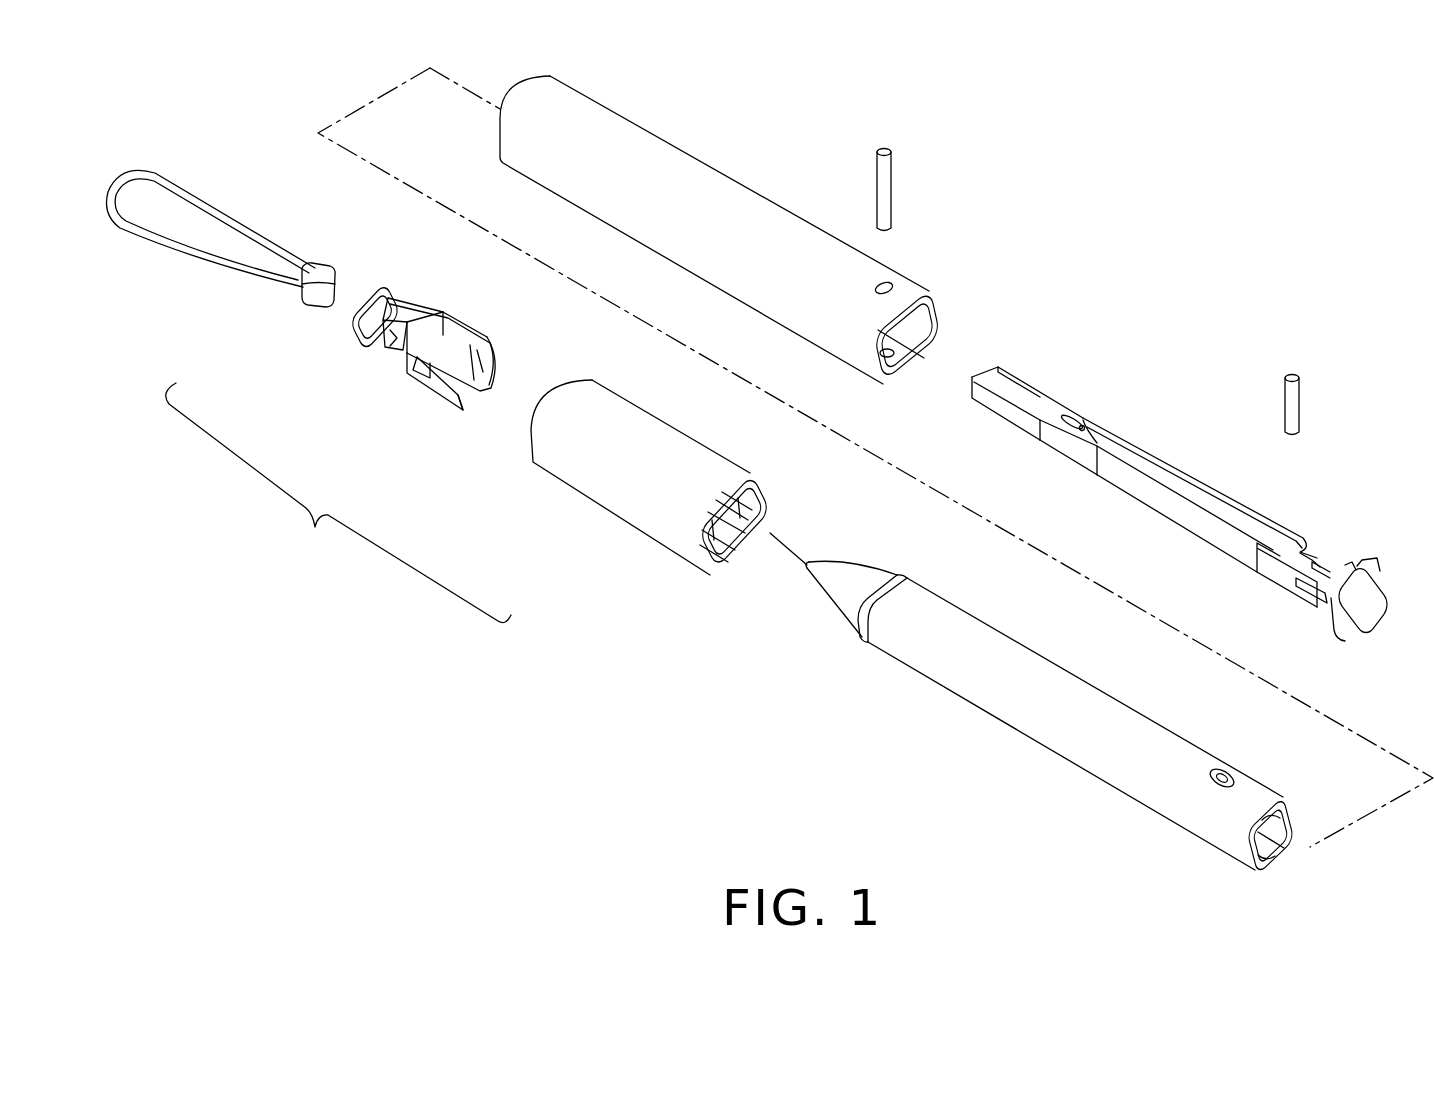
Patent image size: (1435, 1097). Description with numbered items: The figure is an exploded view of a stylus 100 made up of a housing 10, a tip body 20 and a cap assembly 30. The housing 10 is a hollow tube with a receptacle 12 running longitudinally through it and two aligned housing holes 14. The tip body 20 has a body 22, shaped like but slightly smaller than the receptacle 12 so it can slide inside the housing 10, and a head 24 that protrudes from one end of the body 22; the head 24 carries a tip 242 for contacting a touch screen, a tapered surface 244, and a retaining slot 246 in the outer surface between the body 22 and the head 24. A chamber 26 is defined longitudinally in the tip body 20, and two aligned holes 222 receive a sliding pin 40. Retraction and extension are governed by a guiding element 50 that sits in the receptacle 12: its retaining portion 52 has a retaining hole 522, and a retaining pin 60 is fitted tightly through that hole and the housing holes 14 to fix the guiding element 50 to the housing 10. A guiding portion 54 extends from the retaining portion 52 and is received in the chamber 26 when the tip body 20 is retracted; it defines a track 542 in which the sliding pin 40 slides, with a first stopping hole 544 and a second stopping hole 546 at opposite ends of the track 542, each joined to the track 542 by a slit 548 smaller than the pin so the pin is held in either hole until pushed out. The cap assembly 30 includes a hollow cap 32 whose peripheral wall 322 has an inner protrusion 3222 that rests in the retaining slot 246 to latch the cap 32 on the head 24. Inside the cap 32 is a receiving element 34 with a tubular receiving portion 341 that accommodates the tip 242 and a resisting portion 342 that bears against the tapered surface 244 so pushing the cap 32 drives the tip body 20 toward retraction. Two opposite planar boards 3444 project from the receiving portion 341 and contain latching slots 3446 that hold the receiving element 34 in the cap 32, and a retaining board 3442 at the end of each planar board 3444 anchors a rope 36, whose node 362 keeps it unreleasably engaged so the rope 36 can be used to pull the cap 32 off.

The stylus 100 is at (1083, 191).
The housing 10 is at (755, 230).
The receptacle 12 is at (915, 325).
The housing holes 14 is at (891, 283).
The tip body 20 is at (1054, 687).
The body 22 is at (1065, 723).
The holes 222 is at (1208, 785).
The head 24 is at (822, 597).
The tip 242 is at (805, 576).
The tapered surface 244 is at (843, 603).
The retaining slot 246 is at (862, 613).
The chamber 26 is at (1272, 840).
The cap assembly 30 is at (338, 503).
The cap 32 is at (641, 504).
The peripheral wall 322 is at (588, 478).
The protrusion 3222 is at (727, 548).
The receiving element 34 is at (407, 381).
The receiving portion 341 is at (443, 325).
The resisting portion 342 is at (487, 340).
The retaining board 3442 is at (358, 338).
The planar boards 3444 is at (403, 358).
The latching slots 3446 is at (394, 365).
The rope 36 is at (235, 286).
The node 362 is at (332, 251).
The sliding pin 40 is at (1291, 402).
The guiding element 50 is at (1198, 502).
The retaining portion 52 is at (1318, 588).
The retaining hole 522 is at (1343, 563).
The guiding portion 54 is at (1001, 408).
The track 542 is at (1150, 468).
The first stopping hole 544 is at (1298, 540).
The second stopping hole 546 is at (1075, 412).
The slit 548 is at (1093, 432).
The retaining pin 60 is at (887, 178).